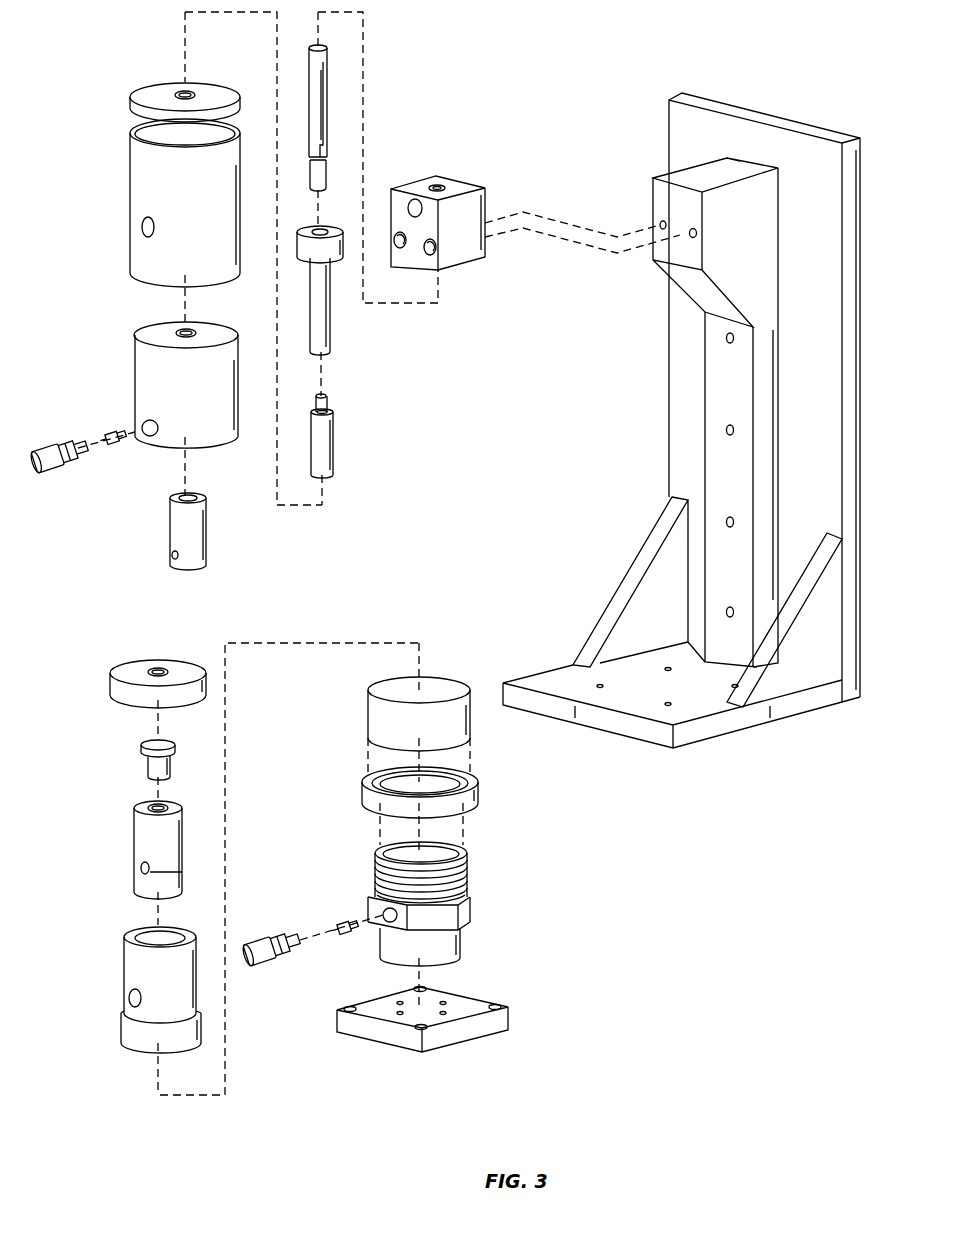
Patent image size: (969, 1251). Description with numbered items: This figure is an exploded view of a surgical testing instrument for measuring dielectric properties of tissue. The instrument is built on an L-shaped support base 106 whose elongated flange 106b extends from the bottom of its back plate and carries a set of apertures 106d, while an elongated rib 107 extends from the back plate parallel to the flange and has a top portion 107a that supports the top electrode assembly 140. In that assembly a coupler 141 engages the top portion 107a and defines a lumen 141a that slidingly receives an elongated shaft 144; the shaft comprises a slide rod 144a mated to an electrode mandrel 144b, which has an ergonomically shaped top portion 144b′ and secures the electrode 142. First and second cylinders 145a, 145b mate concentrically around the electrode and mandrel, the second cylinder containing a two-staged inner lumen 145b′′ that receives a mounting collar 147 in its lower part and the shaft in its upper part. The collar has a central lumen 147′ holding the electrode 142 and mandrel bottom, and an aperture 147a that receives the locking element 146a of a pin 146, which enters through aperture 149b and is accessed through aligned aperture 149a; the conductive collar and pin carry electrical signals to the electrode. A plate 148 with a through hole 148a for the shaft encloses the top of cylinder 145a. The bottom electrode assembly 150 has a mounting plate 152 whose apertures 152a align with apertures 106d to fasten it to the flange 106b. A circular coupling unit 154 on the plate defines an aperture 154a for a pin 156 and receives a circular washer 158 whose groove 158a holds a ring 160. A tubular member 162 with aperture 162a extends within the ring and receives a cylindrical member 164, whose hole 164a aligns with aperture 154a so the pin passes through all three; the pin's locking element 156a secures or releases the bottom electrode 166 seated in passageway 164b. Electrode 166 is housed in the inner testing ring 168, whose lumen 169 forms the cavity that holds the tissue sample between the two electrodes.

The support base 106 is at (775, 105).
The elongated flange 106b is at (597, 672).
The apertures 106d is at (727, 685).
The elongated rib 107 is at (768, 438).
The top portion 107a is at (760, 235).
The top electrode assembly 140 is at (120, 118).
The coupler 141 is at (470, 245).
The lumen 141a is at (440, 185).
The electrode 142 is at (326, 440).
The elongated shaft 144 is at (336, 60).
The slide rod 144a is at (323, 105).
The electrode mandrel 144b is at (323, 340).
The top portion 144b′ is at (325, 252).
The first cylinder 145a is at (142, 178).
The second cylinder 145b is at (145, 387).
The two-staged inner lumen 145b′′ is at (178, 330).
The pin 146 is at (45, 466).
The locking element 146a is at (115, 447).
The mounting collar 147 is at (196, 527).
The lumen 147′ is at (200, 492).
The aperture 147a is at (170, 556).
The plate 148 is at (142, 90).
The through hole 148a is at (183, 88).
The aperture 149a is at (143, 222).
The aperture 149b is at (142, 424).
The bottom electrode assembly 150 is at (90, 860).
The mounting plate 152 is at (478, 1034).
The apertures 152a is at (418, 1030).
The circular coupling unit 154 is at (468, 942).
The aperture 154a is at (376, 906).
The pin 156 is at (263, 966).
The locking element 156a is at (348, 937).
The circular washer 158 is at (368, 796).
The groove 158a is at (366, 776).
The ring 160 is at (378, 720).
The tubular member 162 is at (136, 973).
The aperture 162a is at (128, 998).
The cylindrical member 164 is at (142, 843).
The hole 164a is at (142, 870).
The passageway 164b is at (147, 803).
The electrode 166 is at (145, 765).
The inner testing ring 168 is at (143, 663).
The lumen 169 is at (160, 672).